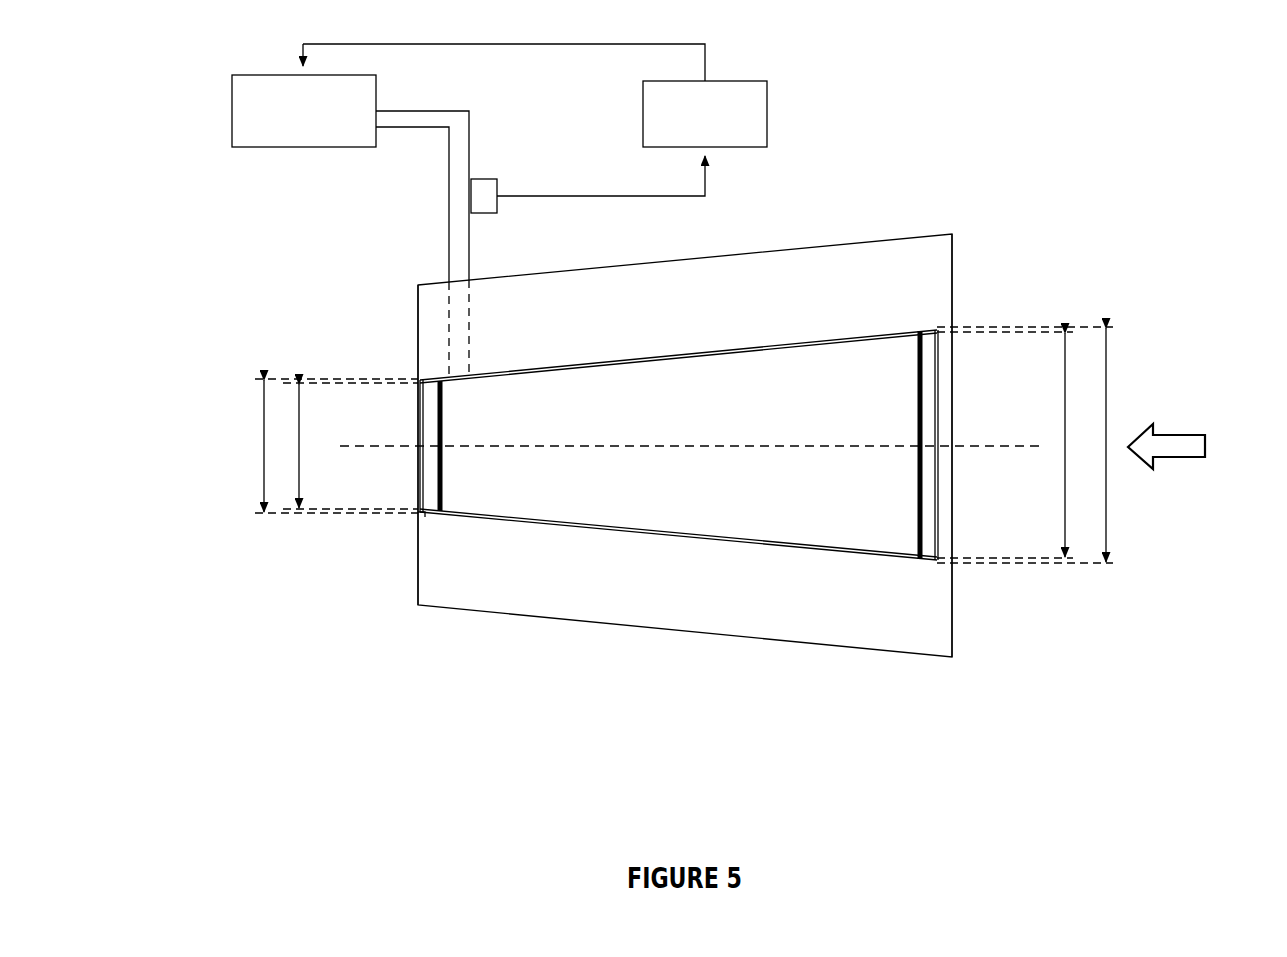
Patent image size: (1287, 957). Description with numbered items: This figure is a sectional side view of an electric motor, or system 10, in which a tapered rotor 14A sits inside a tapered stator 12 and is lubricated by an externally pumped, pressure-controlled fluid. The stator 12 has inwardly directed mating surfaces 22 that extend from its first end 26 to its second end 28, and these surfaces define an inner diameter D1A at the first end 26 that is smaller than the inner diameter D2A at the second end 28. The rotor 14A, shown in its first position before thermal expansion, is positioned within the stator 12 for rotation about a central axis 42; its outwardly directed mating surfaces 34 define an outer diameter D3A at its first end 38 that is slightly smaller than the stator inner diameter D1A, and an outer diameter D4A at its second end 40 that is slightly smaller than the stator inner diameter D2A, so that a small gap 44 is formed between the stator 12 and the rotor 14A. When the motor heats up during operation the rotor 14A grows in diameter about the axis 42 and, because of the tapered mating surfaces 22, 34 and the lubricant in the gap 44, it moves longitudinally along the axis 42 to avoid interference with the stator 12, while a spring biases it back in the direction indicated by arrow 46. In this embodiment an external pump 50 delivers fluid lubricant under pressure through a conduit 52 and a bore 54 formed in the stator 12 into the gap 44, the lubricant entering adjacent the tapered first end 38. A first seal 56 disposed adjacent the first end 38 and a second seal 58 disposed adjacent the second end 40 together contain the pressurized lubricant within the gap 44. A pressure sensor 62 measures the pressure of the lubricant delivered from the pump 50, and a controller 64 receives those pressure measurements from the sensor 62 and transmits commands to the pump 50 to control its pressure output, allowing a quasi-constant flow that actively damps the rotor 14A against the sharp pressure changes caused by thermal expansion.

The motor 10 is at (242, 267).
The stator 12 is at (427, 316).
The rotor 14A is at (801, 366).
The mating surfaces 22 is at (540, 521).
The first end 26 is at (408, 344).
The second end 28 is at (963, 282).
The mating surfaces 34 is at (433, 518).
The first end 38 is at (408, 410).
The second end 40 is at (948, 383).
The central axis 42 is at (372, 446).
The gap 44 is at (488, 520).
The arrow 46 is at (1188, 458).
The external pump 50 is at (347, 147).
The conduit 52 is at (457, 127).
The bore 54 is at (457, 298).
The first seal 56 is at (443, 455).
The second seal 58 is at (918, 420).
The pressure sensor 62 is at (482, 187).
The controller 64 is at (748, 122).
The inner diameter D1A is at (264, 428).
The outer diameter D3A is at (299, 490).
The inner diameter D2A is at (1107, 355).
The outer diameter D4A is at (1065, 482).